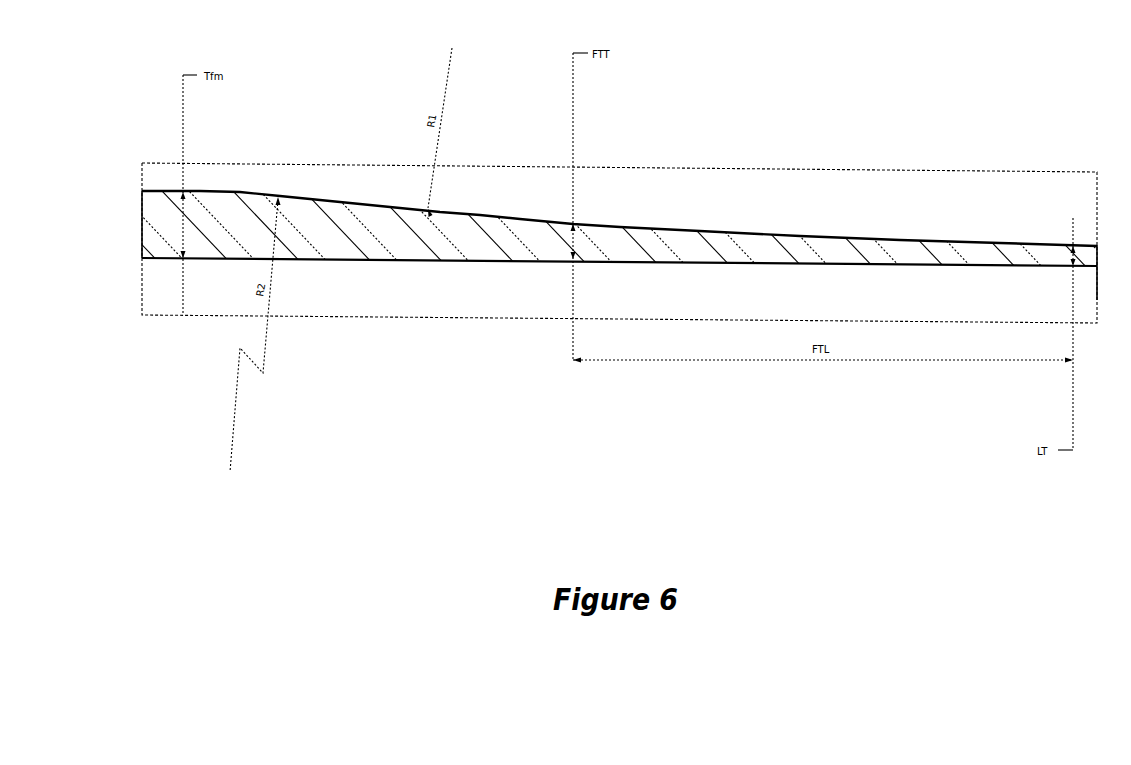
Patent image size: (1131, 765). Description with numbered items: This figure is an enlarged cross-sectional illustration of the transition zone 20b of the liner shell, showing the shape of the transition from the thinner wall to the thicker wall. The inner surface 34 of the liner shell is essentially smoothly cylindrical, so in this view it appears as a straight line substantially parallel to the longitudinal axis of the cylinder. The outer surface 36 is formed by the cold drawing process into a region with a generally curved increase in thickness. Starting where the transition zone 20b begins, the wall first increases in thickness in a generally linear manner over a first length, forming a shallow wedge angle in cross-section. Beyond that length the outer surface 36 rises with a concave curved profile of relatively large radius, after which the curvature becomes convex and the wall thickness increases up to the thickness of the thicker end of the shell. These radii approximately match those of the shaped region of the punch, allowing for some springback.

The transition zone 20b is at (619, 224).
The inner surface 34 is at (380, 260).
The outer surface 36 is at (342, 202).